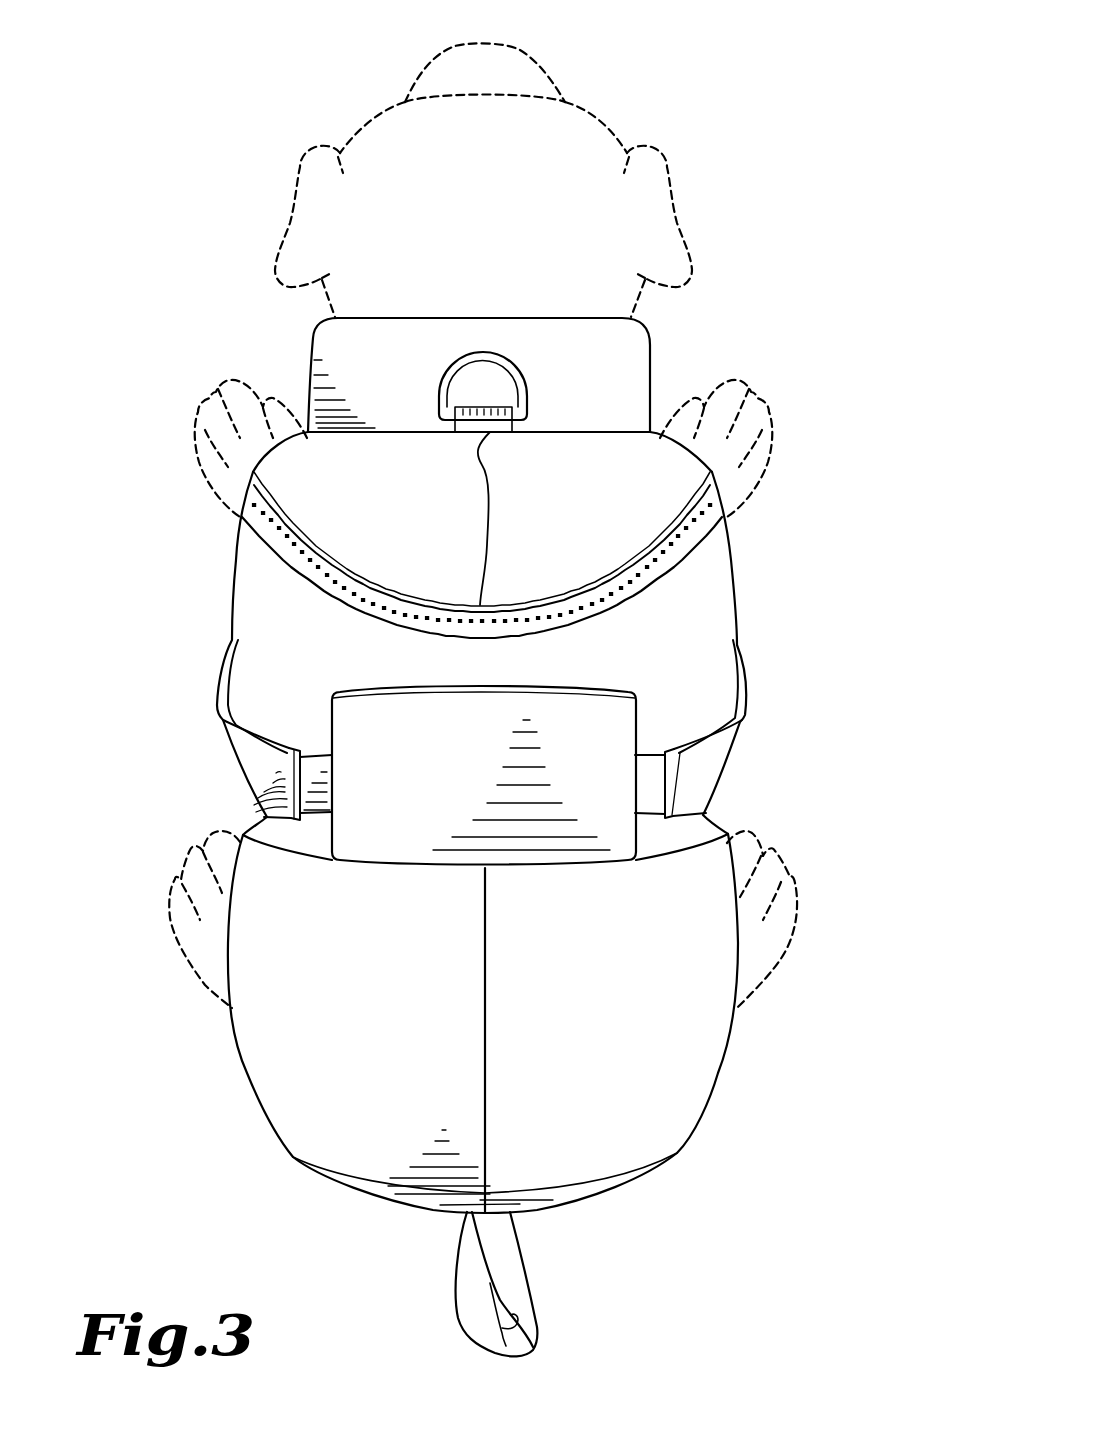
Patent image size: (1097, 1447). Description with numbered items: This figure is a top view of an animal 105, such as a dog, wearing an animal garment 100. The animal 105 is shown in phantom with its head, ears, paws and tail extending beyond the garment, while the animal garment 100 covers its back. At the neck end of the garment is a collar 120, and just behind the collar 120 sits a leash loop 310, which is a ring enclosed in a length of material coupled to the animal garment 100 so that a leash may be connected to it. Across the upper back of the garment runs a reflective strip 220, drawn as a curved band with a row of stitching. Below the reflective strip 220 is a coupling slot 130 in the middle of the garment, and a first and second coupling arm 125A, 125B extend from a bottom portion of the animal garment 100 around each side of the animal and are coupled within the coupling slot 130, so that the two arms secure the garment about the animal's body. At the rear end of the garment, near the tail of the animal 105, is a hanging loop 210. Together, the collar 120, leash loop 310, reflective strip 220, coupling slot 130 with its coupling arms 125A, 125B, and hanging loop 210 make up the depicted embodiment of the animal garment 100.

The animal 105 is at (645, 110).
The animal garment 100 is at (272, 327).
The collar 120 is at (652, 371).
The leash loop 310 is at (527, 389).
The reflective strip 220 is at (619, 590).
The coupling slot 130 is at (331, 693).
The first coupling arm 125A is at (222, 765).
The second coupling arm 125B is at (768, 780).
The hanging loop 210 is at (540, 1333).